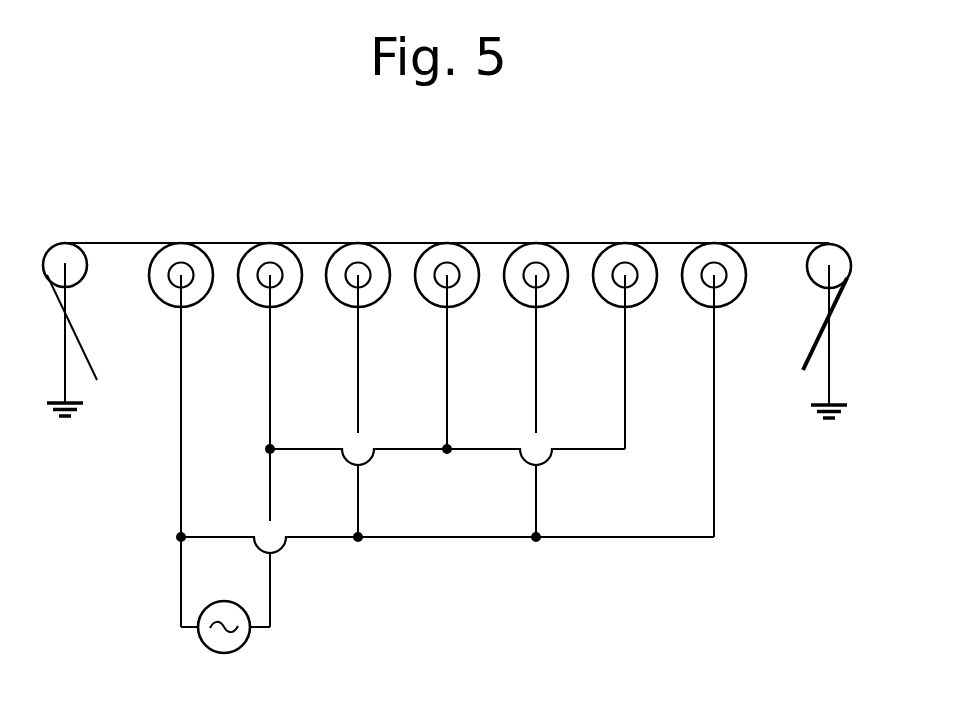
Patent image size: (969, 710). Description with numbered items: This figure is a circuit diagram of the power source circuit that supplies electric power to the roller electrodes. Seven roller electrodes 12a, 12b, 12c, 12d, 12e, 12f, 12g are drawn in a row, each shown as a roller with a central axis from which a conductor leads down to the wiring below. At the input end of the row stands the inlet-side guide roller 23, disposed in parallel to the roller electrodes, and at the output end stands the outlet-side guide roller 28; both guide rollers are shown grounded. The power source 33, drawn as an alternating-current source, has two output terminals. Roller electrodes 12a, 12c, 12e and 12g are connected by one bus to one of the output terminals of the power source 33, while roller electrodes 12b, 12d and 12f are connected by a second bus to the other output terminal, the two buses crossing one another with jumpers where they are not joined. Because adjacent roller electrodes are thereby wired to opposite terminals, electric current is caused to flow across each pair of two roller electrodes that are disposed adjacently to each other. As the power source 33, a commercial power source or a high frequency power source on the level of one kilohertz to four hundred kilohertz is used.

The roller electrode 12a is at (183, 250).
The roller electrode 12b is at (270, 250).
The roller electrode 12c is at (357, 250).
The roller electrode 12d is at (448, 250).
The roller electrode 12e is at (537, 250).
The roller electrode 12f is at (625, 250).
The roller electrode 12g is at (712, 250).
The guide roller 23 is at (55, 268).
The guide roller 28 is at (835, 255).
The power source 33 is at (243, 641).